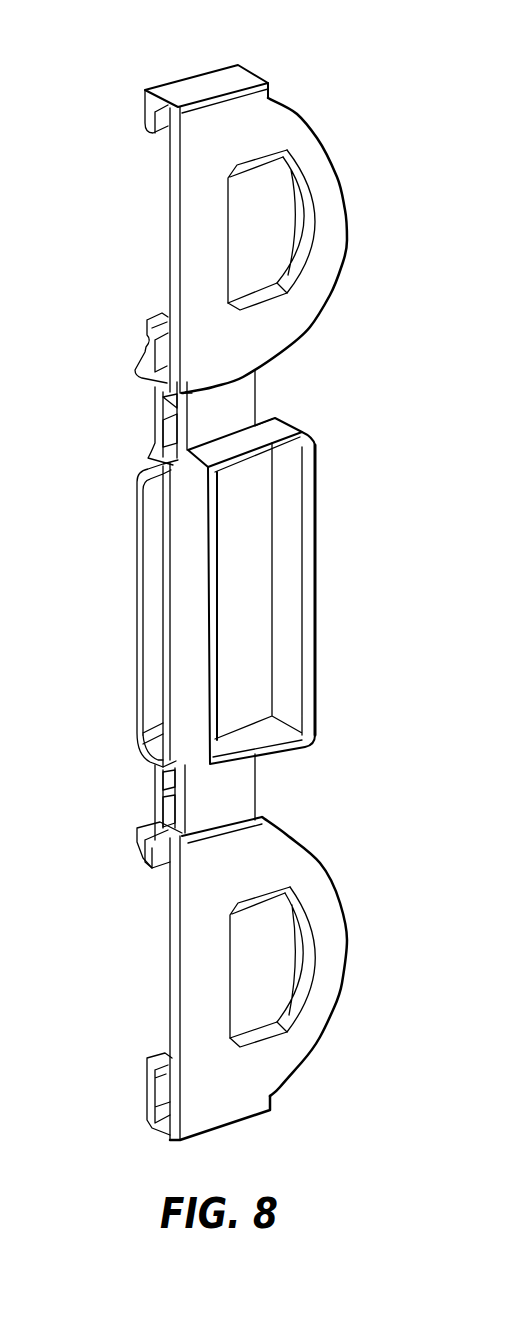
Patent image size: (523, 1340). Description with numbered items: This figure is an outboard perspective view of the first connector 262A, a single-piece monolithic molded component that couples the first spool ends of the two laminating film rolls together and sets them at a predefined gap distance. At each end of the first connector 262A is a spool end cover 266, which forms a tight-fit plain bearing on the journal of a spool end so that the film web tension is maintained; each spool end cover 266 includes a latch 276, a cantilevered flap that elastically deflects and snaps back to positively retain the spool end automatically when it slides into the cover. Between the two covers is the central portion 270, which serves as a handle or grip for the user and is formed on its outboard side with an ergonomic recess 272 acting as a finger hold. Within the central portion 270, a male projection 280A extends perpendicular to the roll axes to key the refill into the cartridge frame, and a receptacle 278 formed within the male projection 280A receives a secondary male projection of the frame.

The first connector 262A is at (148, 58).
The spool end cover 266 is at (317, 157).
The latch 276 is at (252, 248).
The central portion 270 is at (228, 592).
The ergonomic recess 272 is at (250, 618).
The receptacle 278 is at (153, 593).
The male projection 280A is at (185, 732).